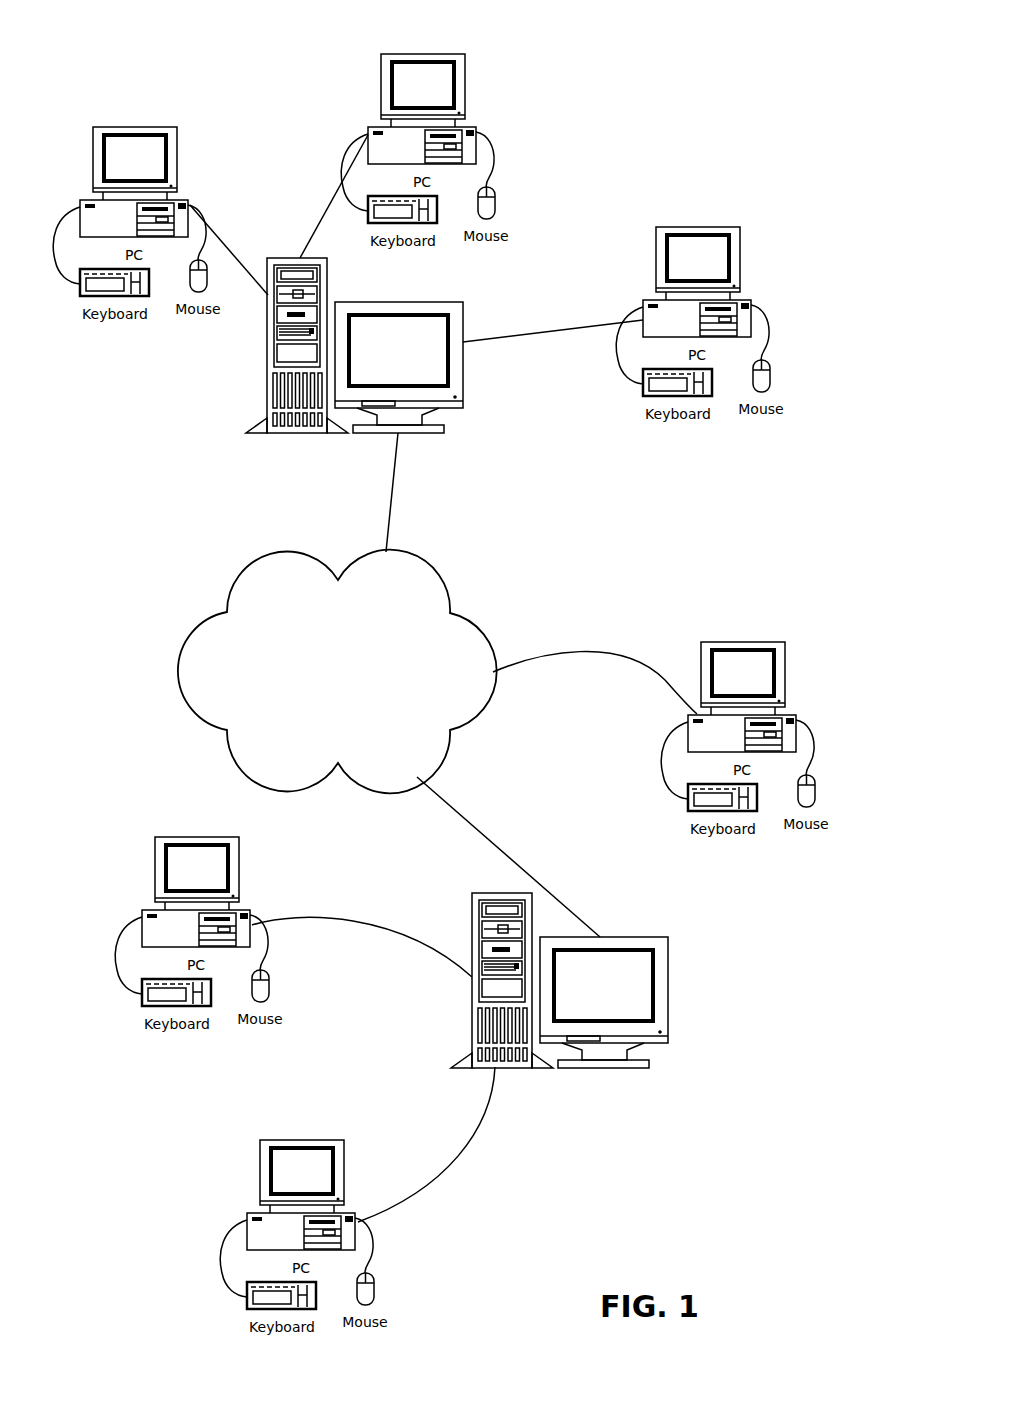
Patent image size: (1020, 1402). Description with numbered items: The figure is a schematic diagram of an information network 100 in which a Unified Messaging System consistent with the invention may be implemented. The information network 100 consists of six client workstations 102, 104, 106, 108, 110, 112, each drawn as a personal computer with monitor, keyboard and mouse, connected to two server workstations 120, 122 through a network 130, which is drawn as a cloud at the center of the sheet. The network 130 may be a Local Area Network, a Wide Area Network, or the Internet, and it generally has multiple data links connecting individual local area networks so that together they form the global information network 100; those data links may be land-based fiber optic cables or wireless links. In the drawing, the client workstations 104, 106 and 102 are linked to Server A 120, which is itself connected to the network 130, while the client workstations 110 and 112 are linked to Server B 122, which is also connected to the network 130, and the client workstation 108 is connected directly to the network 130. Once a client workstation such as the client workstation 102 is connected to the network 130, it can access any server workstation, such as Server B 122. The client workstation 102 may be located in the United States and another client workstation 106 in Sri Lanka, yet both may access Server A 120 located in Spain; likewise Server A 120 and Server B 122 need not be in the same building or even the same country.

The information network 100 is at (602, 106).
The client workstation 102 is at (752, 300).
The client workstation 104 is at (475, 127).
The client workstation 106 is at (187, 200).
The client workstation 108 is at (753, 642).
The client workstation 110 is at (200, 837).
The client workstation 112 is at (308, 1140).
The Server A 120 is at (465, 385).
The Server B 122 is at (671, 980).
The network 130 is at (482, 625).